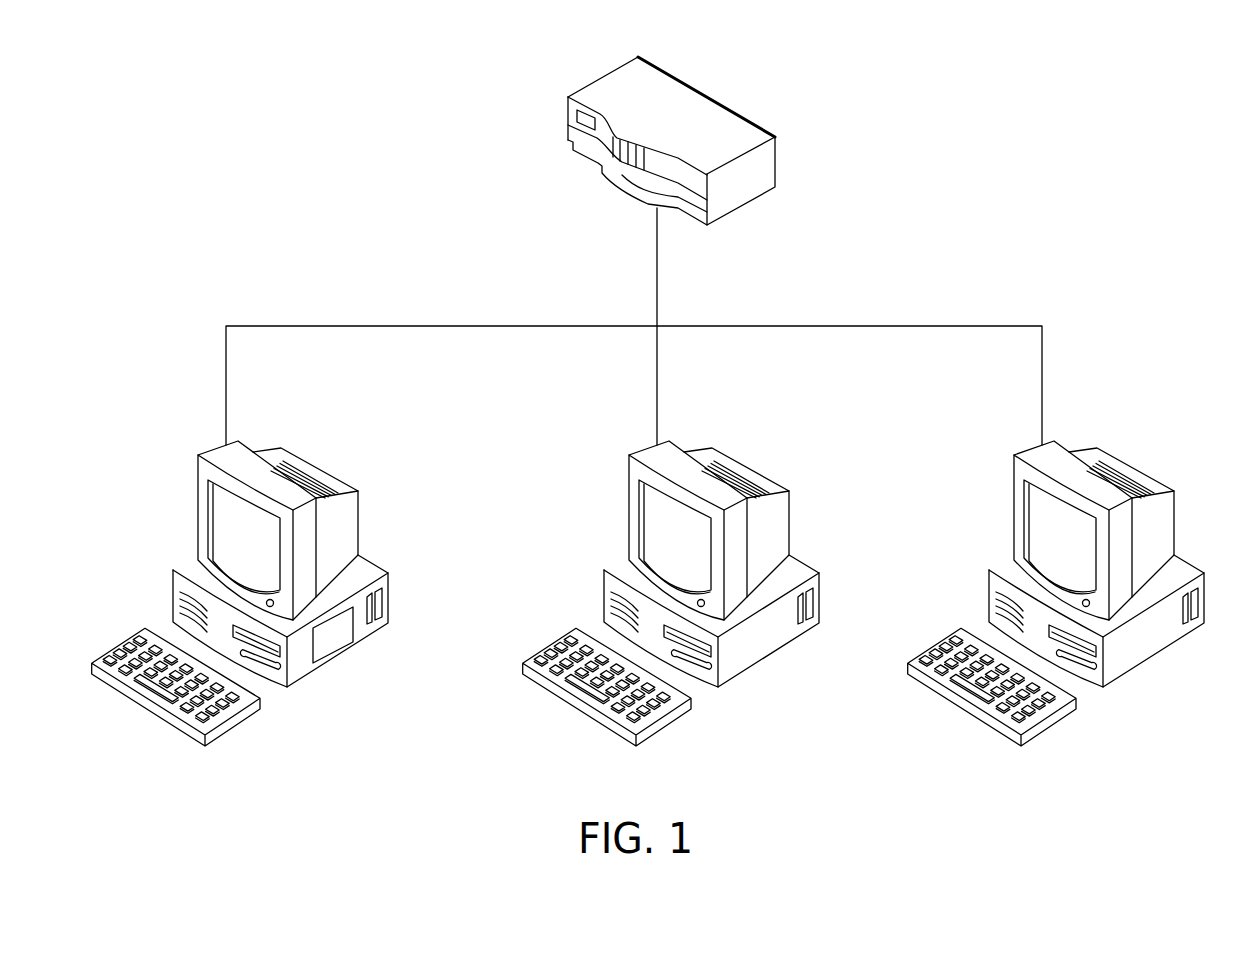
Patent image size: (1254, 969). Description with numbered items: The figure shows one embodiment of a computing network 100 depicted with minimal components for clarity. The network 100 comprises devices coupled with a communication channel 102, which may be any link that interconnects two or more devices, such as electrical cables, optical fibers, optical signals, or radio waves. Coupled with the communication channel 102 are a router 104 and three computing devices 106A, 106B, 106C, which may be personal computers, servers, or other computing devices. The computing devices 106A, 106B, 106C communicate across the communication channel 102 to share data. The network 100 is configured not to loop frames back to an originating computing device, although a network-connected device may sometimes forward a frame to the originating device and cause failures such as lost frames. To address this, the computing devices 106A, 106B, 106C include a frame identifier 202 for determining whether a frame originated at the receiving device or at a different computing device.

The computing network 100 is at (300, 133).
The communication channel 102 is at (915, 324).
The router 104 is at (747, 121).
The computing device 106A is at (240, 590).
The computing device 106B is at (732, 457).
The computing device 106C is at (1117, 457).
The frame identifier 202 is at (345, 641).